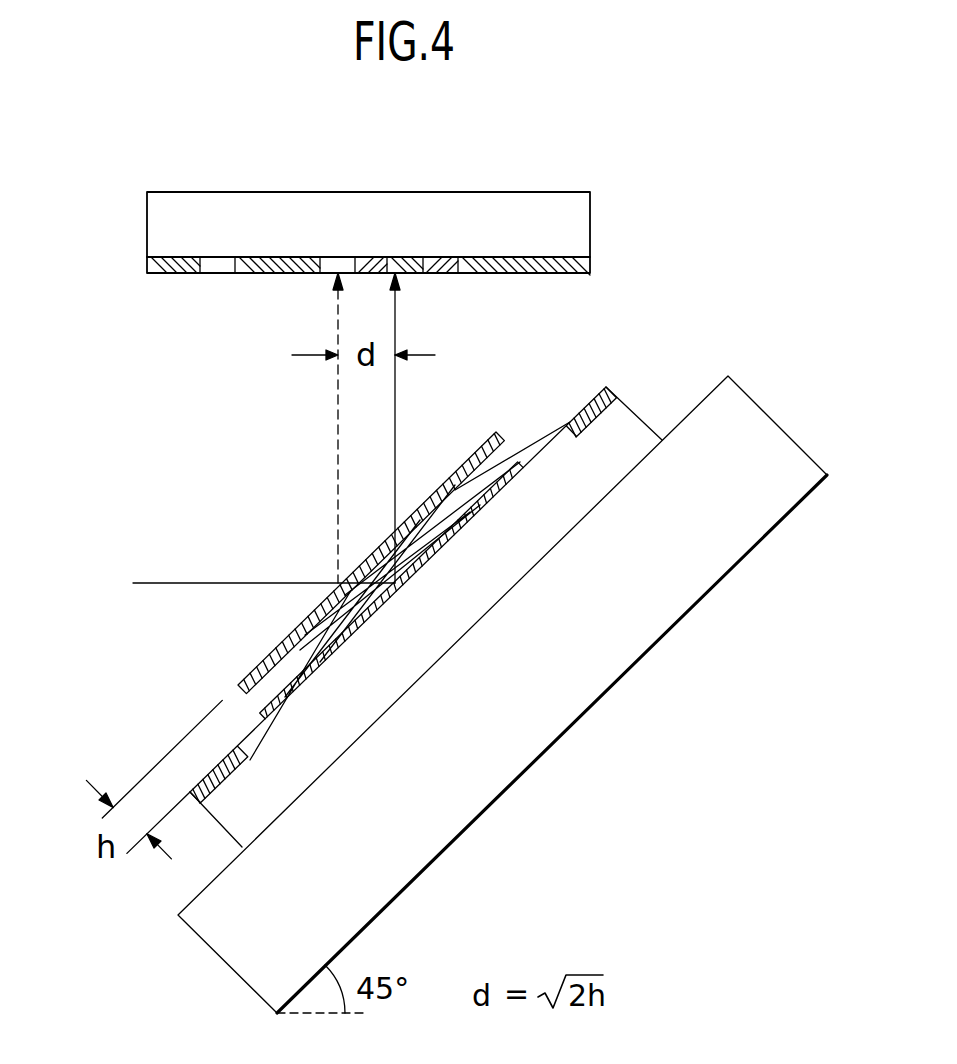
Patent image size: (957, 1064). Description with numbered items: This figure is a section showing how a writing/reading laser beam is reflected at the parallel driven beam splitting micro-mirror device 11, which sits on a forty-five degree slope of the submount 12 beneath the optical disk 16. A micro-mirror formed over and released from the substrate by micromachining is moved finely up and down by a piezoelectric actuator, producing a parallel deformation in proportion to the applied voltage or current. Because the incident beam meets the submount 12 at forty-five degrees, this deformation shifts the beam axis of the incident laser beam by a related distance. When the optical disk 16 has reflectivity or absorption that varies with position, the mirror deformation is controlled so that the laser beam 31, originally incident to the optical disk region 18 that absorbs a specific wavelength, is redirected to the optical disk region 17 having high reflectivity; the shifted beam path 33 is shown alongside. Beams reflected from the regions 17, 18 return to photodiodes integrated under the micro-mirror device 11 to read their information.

The parallel driven beam splitting micro-mirror device 11 is at (623, 384).
The submount 12 is at (758, 443).
The optical disk 16 is at (592, 238).
The optical disk region 17 is at (338, 280).
The optical disk region 18 is at (395, 280).
The laser beam 31 is at (395, 396).
The second light beam 33 is at (338, 441).